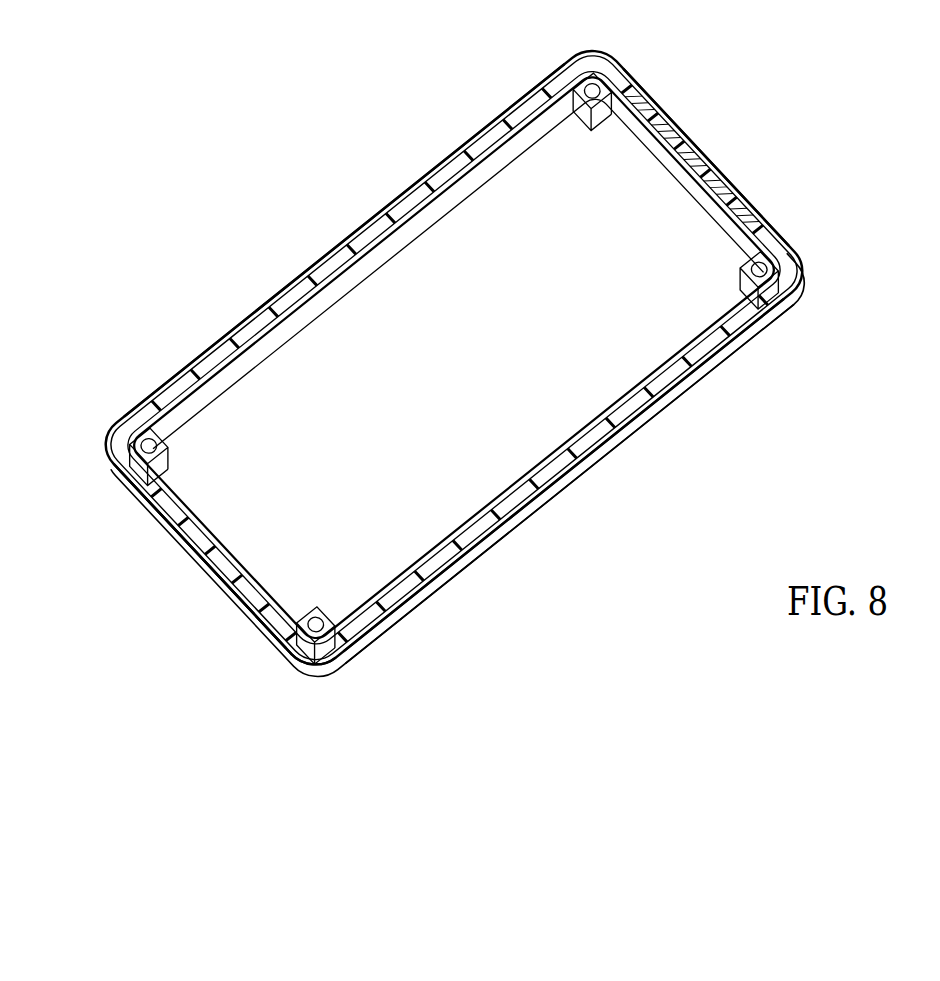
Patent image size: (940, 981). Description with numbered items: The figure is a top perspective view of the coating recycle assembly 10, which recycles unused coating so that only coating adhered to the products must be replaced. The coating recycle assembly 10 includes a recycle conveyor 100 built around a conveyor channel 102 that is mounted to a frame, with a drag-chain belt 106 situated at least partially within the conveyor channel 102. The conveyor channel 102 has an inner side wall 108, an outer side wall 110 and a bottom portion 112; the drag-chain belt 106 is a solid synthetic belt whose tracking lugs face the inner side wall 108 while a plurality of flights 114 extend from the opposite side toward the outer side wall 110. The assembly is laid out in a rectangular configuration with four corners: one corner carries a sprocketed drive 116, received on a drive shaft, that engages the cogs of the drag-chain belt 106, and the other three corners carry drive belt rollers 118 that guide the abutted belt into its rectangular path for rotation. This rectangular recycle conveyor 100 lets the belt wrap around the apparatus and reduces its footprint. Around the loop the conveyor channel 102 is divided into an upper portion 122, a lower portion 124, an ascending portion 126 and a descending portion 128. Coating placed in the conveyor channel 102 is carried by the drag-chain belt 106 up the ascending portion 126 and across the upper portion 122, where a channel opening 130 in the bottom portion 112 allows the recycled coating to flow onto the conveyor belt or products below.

The coating recycle assembly 10 is at (803, 221).
The recycle conveyor 100 is at (360, 670).
The conveyor channel 102 is at (246, 635).
The drag-chain belt 106 is at (222, 530).
The inner side wall 108 is at (286, 331).
The outer side wall 110 is at (479, 553).
The bottom portion 112 is at (203, 554).
The flights 114 is at (141, 499).
The sprocketed drive 116 is at (313, 614).
The drive belt rollers 118 is at (185, 449).
The upper portion 122 is at (702, 155).
The lower portion 124 is at (164, 526).
The ascending portion 126 is at (378, 214).
The descending portion 128 is at (603, 461).
The channel opening 130 is at (661, 130).